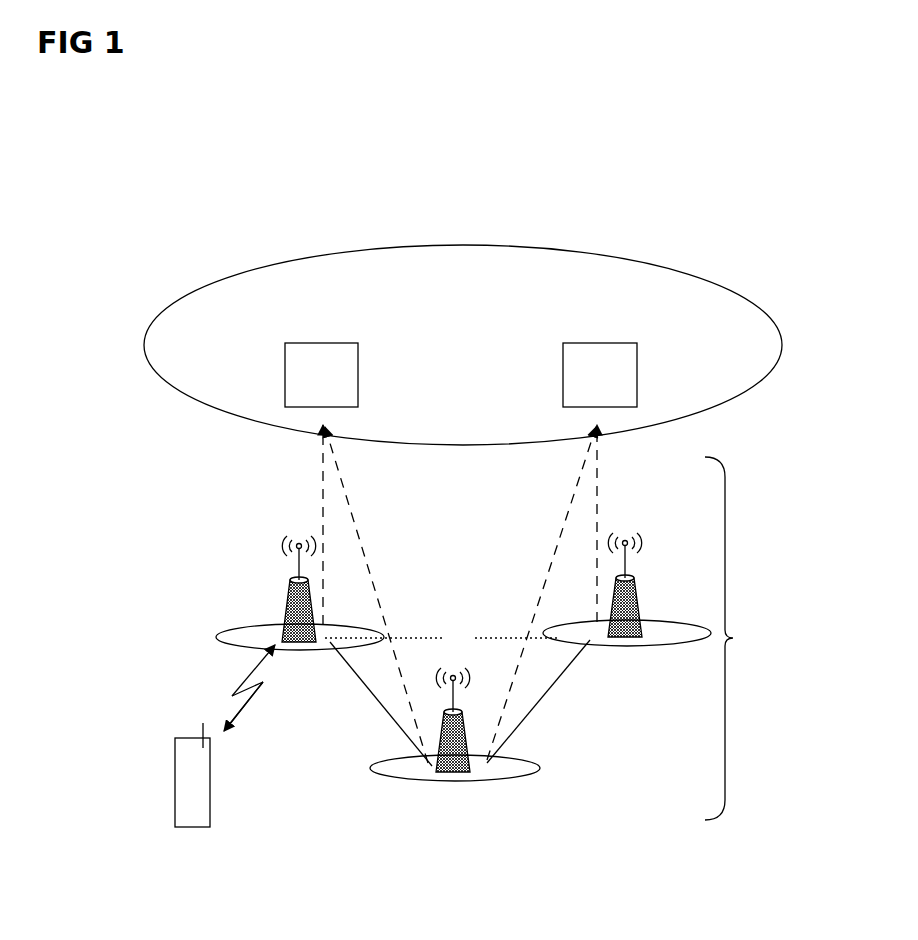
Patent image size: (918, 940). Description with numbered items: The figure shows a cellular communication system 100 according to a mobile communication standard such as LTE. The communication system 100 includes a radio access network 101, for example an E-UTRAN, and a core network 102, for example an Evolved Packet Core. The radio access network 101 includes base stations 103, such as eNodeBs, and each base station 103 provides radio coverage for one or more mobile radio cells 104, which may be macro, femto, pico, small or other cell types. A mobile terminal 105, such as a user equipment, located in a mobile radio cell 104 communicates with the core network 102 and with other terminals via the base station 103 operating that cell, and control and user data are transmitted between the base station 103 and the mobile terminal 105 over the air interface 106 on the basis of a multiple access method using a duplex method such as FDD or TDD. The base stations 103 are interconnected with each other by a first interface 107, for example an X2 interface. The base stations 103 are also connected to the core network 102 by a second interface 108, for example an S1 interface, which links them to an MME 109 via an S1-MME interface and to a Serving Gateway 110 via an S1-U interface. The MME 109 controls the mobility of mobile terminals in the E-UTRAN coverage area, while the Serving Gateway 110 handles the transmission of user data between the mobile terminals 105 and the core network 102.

The communication system 100 is at (757, 180).
The radio access network 101 is at (818, 615).
The core network 102 is at (772, 320).
The base station 103 is at (288, 590).
The mobile radio cell 104 is at (228, 637).
The mobile terminal 105 is at (193, 829).
The air interface 106 is at (252, 700).
The first interface 107 is at (365, 715).
The second interface 108 is at (324, 480).
The MME 109 is at (320, 343).
The Serving Gateway 110 is at (600, 343).